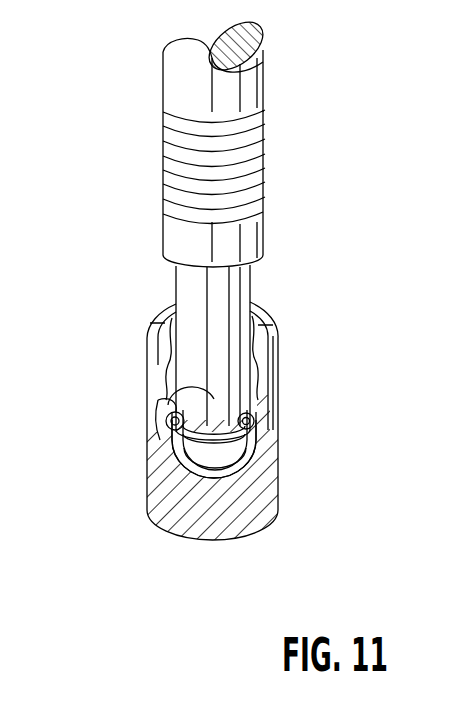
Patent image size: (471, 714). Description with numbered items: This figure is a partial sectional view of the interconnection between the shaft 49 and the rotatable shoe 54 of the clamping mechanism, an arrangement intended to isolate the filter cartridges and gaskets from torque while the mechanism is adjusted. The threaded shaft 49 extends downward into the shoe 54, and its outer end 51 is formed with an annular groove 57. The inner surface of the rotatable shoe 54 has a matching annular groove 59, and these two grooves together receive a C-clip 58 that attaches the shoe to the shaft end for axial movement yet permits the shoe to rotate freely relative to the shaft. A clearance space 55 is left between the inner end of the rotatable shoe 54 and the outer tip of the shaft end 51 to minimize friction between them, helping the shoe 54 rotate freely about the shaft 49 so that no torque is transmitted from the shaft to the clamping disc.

The shaft 49 is at (272, 185).
The outer end of shaft 51 is at (248, 288).
The rotatable shoe 54 is at (264, 382).
The clearance space 55 is at (237, 480).
The annular groove 57 is at (178, 392).
The C-clip 58 is at (170, 452).
The annular groove 59 is at (166, 412).